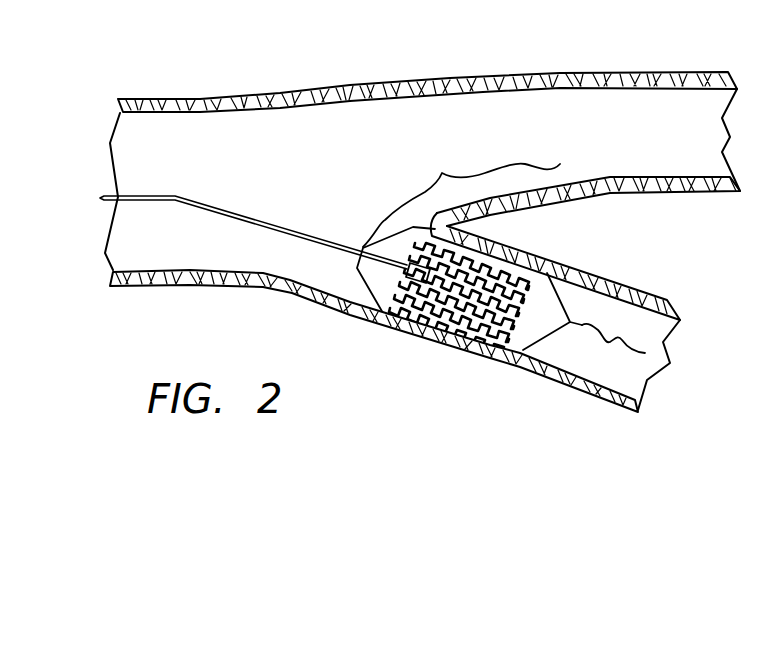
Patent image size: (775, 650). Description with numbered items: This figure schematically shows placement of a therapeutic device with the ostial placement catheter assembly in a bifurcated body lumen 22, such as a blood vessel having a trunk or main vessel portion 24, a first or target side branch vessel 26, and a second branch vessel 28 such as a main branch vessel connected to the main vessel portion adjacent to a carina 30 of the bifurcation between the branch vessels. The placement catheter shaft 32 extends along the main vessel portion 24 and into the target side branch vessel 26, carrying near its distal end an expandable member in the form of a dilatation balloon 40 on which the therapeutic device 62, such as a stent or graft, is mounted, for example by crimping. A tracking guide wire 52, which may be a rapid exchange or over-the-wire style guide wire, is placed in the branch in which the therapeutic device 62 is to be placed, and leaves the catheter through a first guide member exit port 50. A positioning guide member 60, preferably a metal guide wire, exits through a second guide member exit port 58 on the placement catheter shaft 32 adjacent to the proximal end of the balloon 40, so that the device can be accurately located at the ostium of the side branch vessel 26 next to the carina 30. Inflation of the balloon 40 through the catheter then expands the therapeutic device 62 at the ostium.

The bifurcated body lumen 22 is at (252, 70).
The main vessel portion 24 is at (202, 286).
The first side branch vessel 26 is at (643, 293).
The second branch vessel 28 is at (527, 95).
The carina 30 is at (488, 221).
The placement catheter shaft 32 is at (151, 203).
The dilatation balloon 40 is at (383, 283).
The first guide member exit port 50 is at (588, 328).
The tracking guide wire 52 is at (624, 352).
The second guide member exit port 58 is at (363, 247).
The positioning guide member 60 is at (440, 172).
The therapeutic device 62 is at (430, 322).